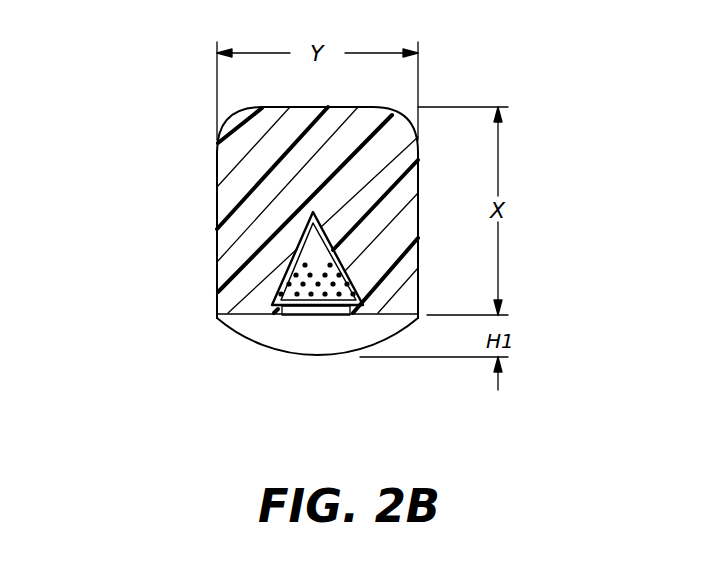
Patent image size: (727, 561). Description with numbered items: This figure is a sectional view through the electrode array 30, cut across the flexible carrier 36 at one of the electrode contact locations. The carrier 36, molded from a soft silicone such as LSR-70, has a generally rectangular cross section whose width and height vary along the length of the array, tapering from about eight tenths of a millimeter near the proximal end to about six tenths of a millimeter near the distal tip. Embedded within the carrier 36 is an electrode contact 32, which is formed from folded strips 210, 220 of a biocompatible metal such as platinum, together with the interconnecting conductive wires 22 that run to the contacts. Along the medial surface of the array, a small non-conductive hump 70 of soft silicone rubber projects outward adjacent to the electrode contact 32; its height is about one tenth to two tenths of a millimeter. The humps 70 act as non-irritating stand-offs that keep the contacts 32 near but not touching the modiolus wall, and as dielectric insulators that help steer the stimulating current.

The electrode array 30 is at (185, 197).
The flexible carrier 36 is at (288, 167).
The interconnecting conductive wires 22 is at (281, 283).
The folded strip 220 is at (350, 257).
The electrode contact 32 is at (317, 315).
The humps 70 is at (257, 328).
The folded strip 210 is at (330, 309).